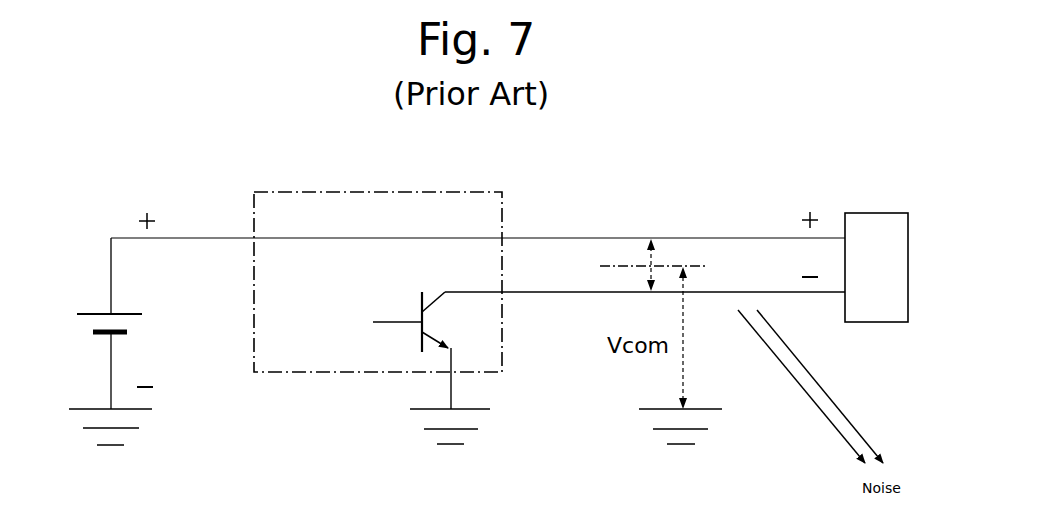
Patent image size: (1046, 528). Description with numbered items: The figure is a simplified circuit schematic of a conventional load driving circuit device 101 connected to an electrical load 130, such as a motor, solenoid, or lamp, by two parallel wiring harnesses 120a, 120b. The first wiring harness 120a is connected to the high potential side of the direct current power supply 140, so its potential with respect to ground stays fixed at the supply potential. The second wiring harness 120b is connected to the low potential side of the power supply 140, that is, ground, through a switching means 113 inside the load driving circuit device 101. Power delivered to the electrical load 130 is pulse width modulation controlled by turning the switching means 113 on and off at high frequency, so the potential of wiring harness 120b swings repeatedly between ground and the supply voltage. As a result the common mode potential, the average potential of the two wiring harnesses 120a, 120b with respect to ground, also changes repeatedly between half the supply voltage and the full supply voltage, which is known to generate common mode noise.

The load driving circuit device 101 is at (327, 192).
The switching means 113 is at (420, 300).
The wiring harness 120a is at (560, 238).
The wiring harness 120b is at (553, 292).
The electrical load 130 is at (873, 213).
The power supply 140 is at (132, 311).